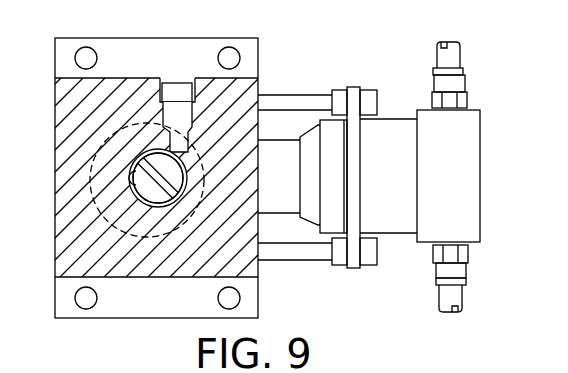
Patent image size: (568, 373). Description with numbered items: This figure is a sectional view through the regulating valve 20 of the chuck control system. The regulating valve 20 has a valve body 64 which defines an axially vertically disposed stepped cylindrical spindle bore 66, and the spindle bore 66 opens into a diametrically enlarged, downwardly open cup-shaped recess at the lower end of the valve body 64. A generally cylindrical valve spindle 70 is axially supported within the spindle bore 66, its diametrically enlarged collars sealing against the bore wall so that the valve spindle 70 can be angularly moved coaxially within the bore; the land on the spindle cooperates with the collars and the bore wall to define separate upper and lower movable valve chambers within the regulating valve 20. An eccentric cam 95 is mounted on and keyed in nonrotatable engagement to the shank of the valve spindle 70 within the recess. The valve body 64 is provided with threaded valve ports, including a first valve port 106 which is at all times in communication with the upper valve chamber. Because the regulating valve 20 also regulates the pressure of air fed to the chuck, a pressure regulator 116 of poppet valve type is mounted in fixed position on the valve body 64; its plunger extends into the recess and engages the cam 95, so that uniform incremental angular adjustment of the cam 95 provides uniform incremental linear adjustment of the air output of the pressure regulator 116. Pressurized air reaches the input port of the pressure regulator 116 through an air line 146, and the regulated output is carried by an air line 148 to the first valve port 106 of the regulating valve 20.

The regulating valve 20 is at (270, 55).
The valve body 64 is at (262, 225).
The spindle bore 66 is at (138, 187).
The valve spindle 70 is at (155, 211).
The eccentric cam 95 is at (125, 241).
The first valve port 106 is at (163, 90).
The pressure regulator 116 is at (493, 114).
The air line 146 is at (450, 55).
The air line 148 is at (450, 295).